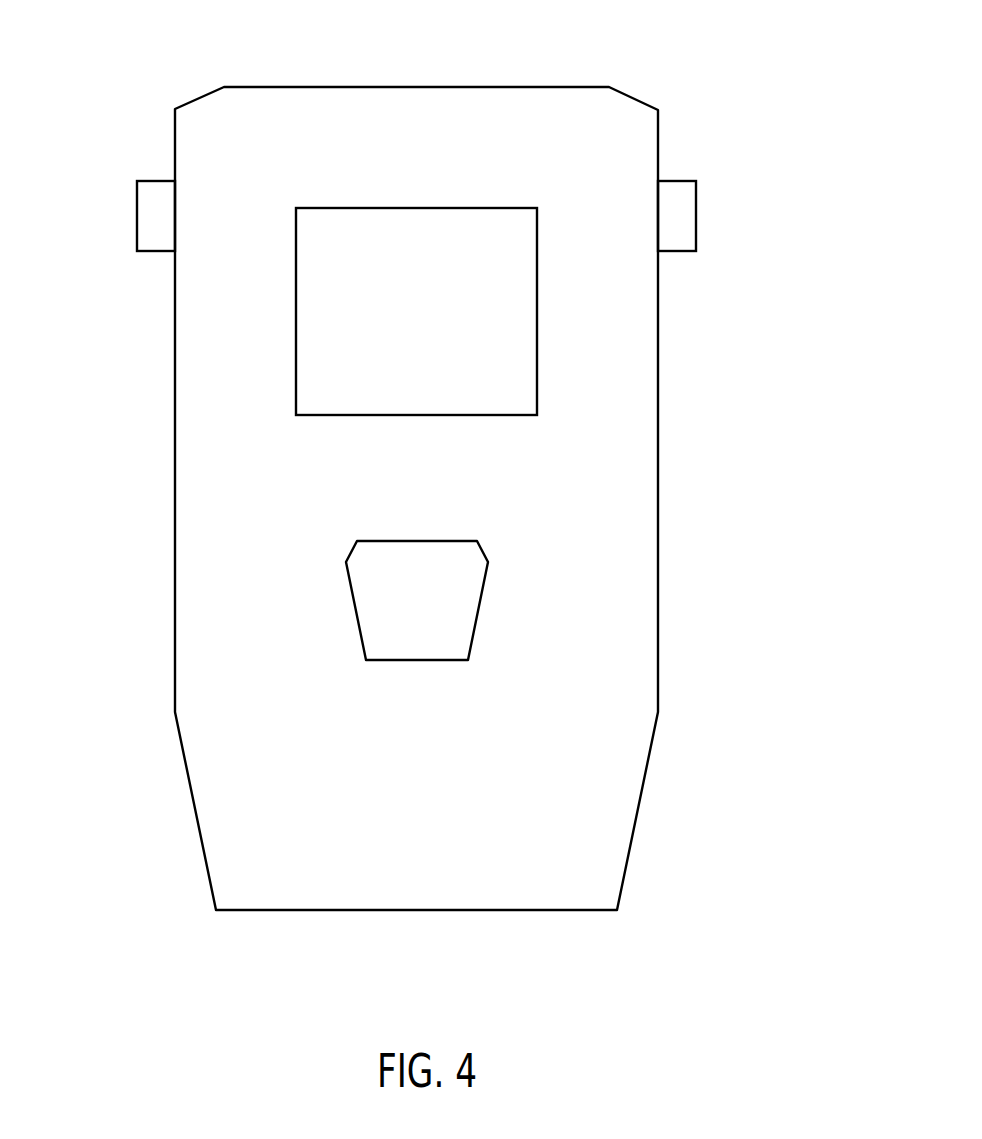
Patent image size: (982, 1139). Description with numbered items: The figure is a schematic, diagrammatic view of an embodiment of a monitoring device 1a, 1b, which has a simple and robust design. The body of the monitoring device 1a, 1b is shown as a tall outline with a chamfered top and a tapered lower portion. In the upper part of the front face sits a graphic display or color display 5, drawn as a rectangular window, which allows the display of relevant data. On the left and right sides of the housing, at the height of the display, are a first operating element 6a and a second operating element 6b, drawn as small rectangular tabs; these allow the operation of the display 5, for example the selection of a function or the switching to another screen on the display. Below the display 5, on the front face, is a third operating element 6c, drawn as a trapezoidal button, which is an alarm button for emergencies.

The monitoring device 1a is at (602, 781).
The monitoring device 1b is at (416, 498).
The graphic display or color display 5 is at (487, 233).
The first operating element 6a is at (153, 213).
The second operating element 6b is at (675, 195).
The third operating element 6c is at (458, 601).